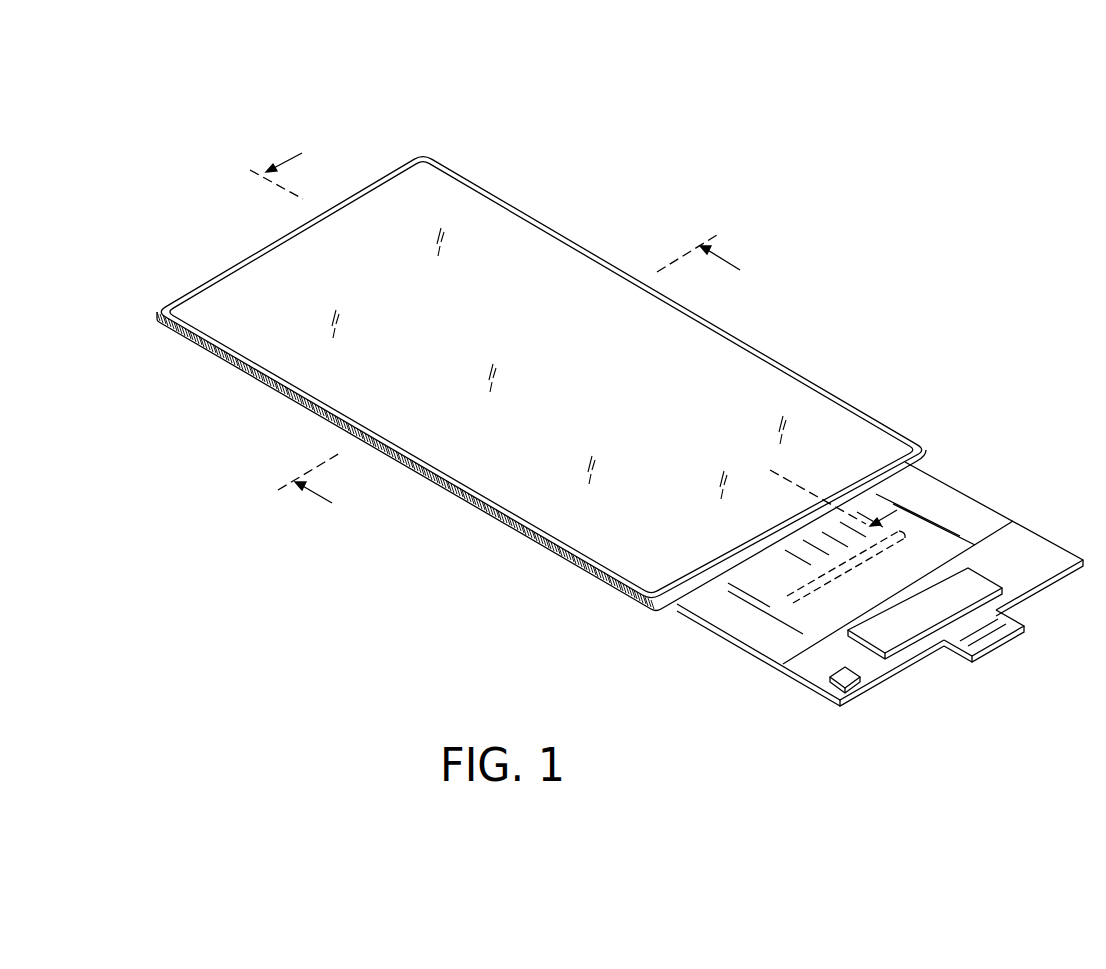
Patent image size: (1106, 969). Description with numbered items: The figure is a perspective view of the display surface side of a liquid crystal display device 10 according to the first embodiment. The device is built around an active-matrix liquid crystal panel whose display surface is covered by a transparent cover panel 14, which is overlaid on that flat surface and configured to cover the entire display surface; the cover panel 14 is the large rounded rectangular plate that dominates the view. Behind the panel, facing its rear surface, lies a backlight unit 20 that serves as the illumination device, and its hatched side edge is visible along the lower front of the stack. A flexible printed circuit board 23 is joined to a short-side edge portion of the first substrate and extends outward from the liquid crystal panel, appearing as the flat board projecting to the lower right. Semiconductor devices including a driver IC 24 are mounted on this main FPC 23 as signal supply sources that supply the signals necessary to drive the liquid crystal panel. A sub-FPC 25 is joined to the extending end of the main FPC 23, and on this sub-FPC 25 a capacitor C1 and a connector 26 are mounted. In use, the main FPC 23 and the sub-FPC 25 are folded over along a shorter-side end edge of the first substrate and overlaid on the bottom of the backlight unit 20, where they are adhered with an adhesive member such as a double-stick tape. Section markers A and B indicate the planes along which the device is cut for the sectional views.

The liquid crystal display device 10 is at (669, 203).
The transparent cover panel 14 is at (570, 272).
The backlight unit 20 is at (506, 542).
The flexible printed circuit board 23 is at (948, 503).
The driver IC 24 is at (797, 578).
The sub-FPC 25 is at (818, 665).
The connector 26 is at (1003, 653).
The capacitor C1 is at (893, 634).
The section line A- A is at (576, 331).
The section line B- B is at (511, 381).